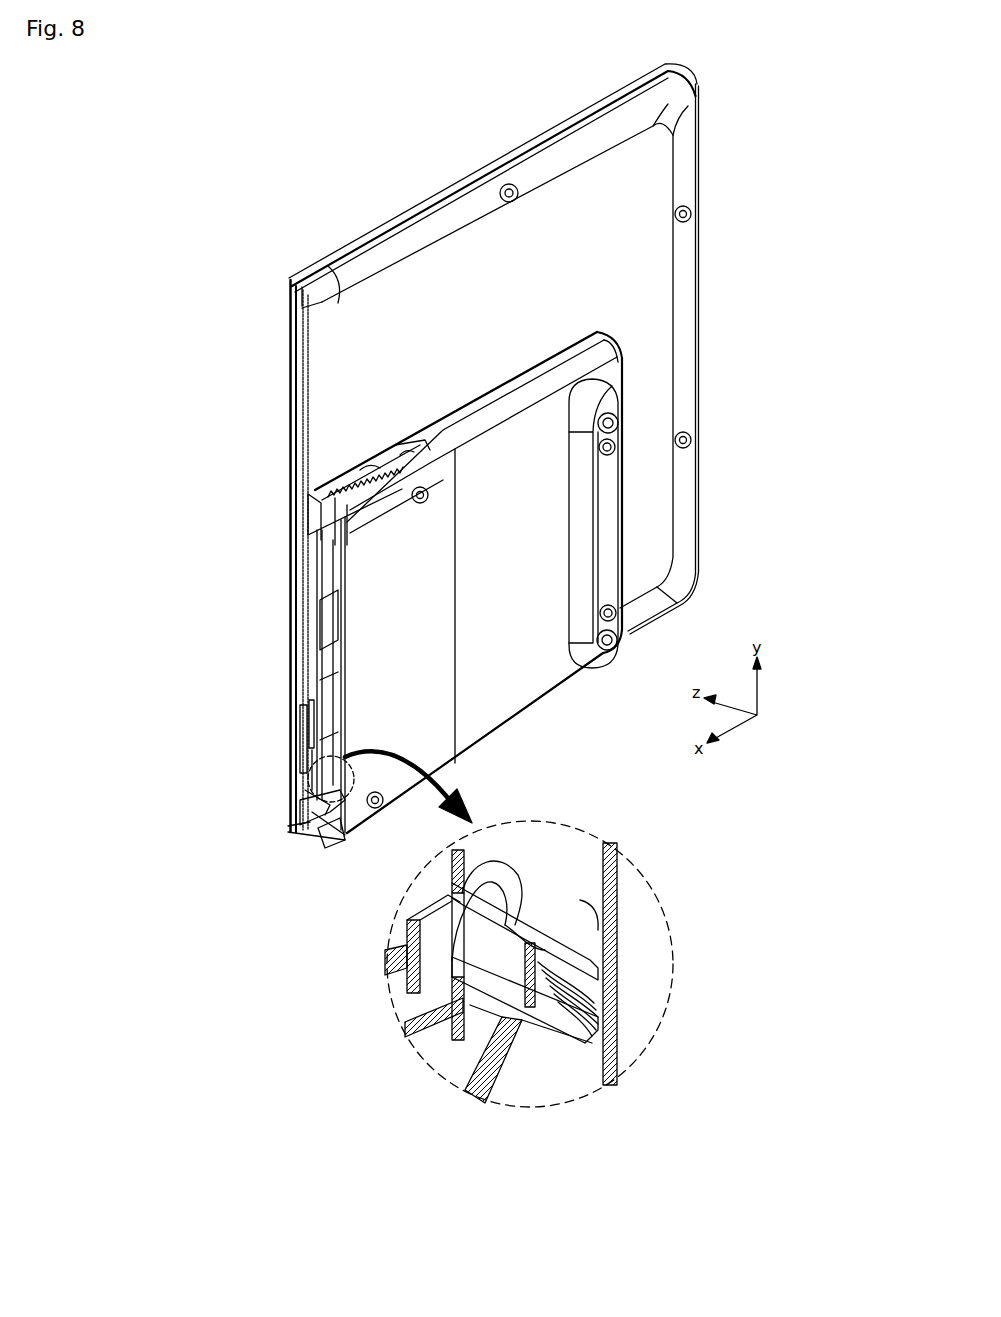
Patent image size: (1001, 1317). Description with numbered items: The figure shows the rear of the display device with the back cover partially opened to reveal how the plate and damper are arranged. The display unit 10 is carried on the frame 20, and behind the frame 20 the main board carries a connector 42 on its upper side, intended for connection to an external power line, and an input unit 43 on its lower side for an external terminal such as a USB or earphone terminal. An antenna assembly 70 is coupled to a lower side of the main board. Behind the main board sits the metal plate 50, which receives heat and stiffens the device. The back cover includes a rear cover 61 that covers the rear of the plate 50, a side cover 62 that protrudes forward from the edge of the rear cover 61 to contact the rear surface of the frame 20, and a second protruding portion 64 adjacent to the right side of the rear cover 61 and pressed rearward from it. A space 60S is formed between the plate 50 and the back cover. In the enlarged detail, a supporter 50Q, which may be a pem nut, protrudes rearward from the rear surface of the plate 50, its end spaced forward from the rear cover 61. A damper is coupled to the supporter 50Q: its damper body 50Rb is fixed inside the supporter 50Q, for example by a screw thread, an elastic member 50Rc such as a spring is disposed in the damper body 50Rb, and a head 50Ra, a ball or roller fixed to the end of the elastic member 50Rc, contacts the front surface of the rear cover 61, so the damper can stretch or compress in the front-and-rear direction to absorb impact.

The display unit 10 is at (290, 358).
The frame 20 is at (378, 350).
The connector 42 is at (300, 498).
The input unit 43 is at (331, 852).
The plate 50 is at (308, 693).
The space 60S is at (310, 625).
The antenna assembly 70 is at (294, 824).
The rear cover 61 is at (540, 552).
The side cover 62 is at (533, 376).
The second protruding portion 64 is at (608, 493).
The supporter 50Q is at (510, 925).
The elastic member 50Rc is at (556, 960).
The head 50Ra is at (603, 1002).
The damper body 50Rb is at (584, 1033).